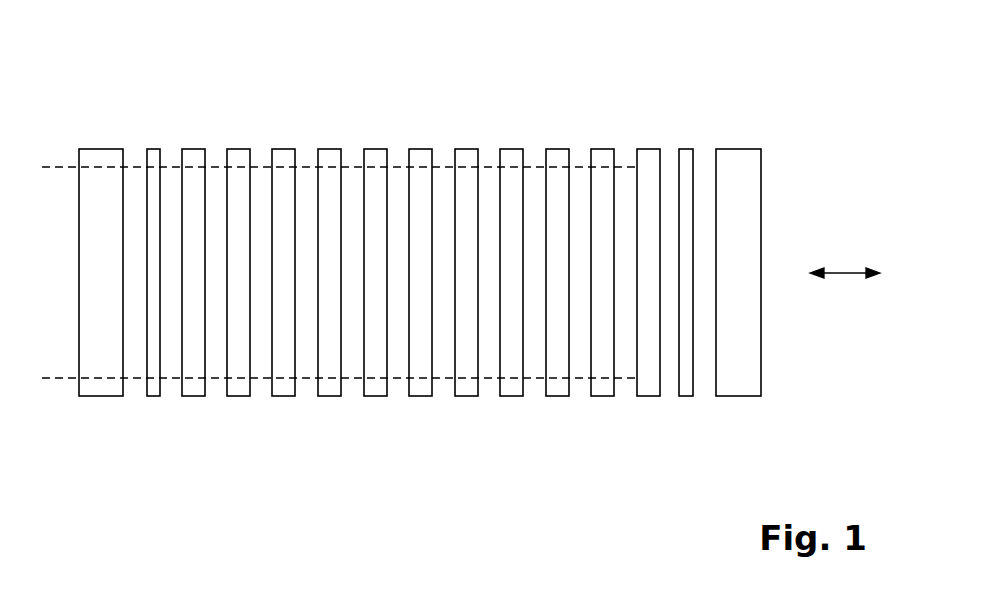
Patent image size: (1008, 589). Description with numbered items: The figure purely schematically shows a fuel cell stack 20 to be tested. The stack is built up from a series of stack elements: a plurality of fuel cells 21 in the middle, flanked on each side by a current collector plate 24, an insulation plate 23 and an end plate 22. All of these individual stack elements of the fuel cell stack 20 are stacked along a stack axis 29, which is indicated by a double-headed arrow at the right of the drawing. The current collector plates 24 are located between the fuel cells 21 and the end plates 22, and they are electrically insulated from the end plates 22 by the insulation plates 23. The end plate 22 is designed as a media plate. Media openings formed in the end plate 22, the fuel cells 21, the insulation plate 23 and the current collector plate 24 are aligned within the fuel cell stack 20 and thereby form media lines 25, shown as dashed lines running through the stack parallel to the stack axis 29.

The fuel cell stack 20 is at (737, 90).
The fuel cells 21 is at (238, 149).
The end plates 22 is at (100, 396).
The insulation plates 23 is at (151, 396).
The current collector plates 24 is at (187, 396).
The media lines 25 is at (63, 165).
The stack axis 29 is at (847, 272).